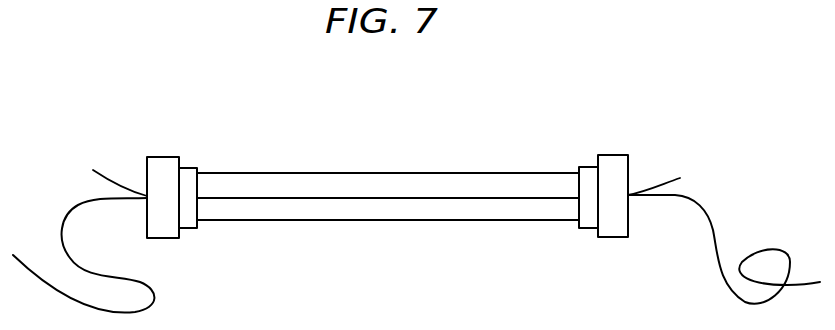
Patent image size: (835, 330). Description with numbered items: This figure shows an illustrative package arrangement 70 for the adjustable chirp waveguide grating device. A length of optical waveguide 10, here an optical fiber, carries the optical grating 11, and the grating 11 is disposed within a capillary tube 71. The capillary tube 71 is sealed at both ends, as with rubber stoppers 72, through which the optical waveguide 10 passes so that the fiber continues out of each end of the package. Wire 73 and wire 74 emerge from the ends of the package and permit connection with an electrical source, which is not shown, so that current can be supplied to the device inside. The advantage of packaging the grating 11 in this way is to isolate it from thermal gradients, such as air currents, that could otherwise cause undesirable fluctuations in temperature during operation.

The package arrangement 70 is at (303, 126).
The rubber stoppers 72 is at (147, 169).
The capillary tube 71 is at (487, 222).
The optical grating 11 is at (402, 195).
The wire 73 is at (110, 188).
The wire 74 is at (665, 180).
The optical waveguide 10 is at (713, 220).